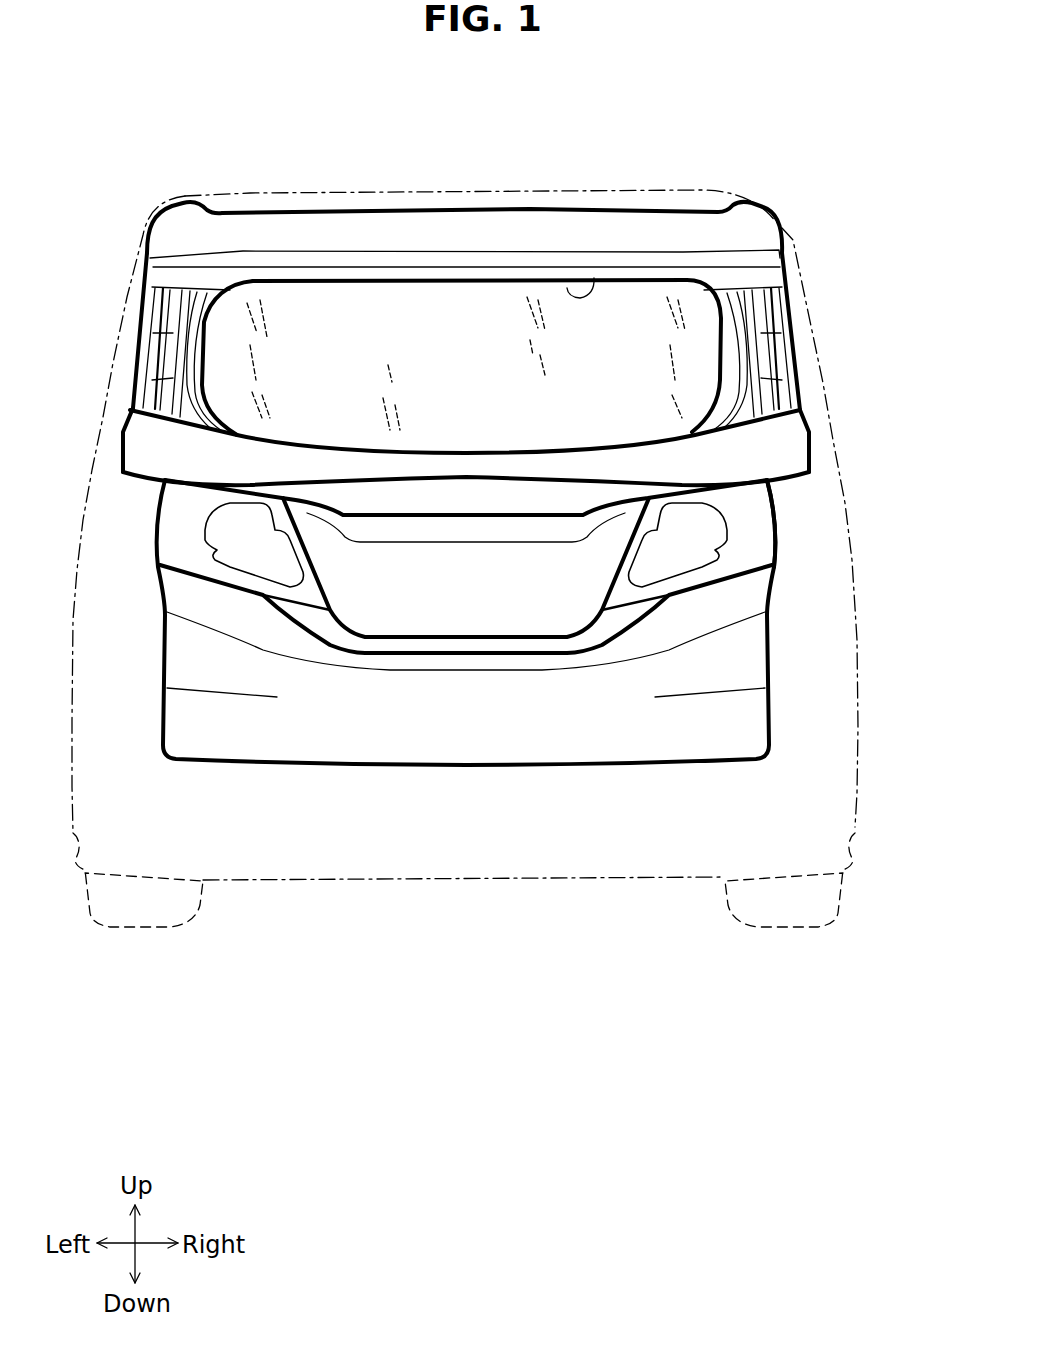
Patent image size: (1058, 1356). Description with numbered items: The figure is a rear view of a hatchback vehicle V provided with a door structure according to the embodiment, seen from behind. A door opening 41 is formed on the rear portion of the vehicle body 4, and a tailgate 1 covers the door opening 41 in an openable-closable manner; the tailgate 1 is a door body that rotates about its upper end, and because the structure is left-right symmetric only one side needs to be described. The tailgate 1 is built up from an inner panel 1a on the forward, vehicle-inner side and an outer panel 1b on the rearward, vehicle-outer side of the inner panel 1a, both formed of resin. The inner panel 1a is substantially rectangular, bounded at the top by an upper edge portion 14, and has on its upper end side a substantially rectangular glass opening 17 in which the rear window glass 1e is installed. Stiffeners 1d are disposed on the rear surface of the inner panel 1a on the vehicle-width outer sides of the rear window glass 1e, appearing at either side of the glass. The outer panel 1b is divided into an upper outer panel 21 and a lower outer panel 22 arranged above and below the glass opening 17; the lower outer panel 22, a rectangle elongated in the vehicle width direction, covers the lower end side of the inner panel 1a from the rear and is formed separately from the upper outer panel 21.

The tailgate 1 is at (807, 432).
The inner panel 1a is at (677, 240).
The outer panel 1b is at (753, 230).
The stiffeners 1d is at (158, 350).
The rear window glass 1e is at (463, 300).
The vehicle body 4 is at (840, 510).
The upper edge portion 14 is at (457, 277).
The glass opening 17 is at (594, 278).
The upper outer panel 21 is at (543, 302).
The lower outer panel 22 is at (750, 657).
The door opening 41 is at (775, 537).
The vehicle V is at (719, 98).